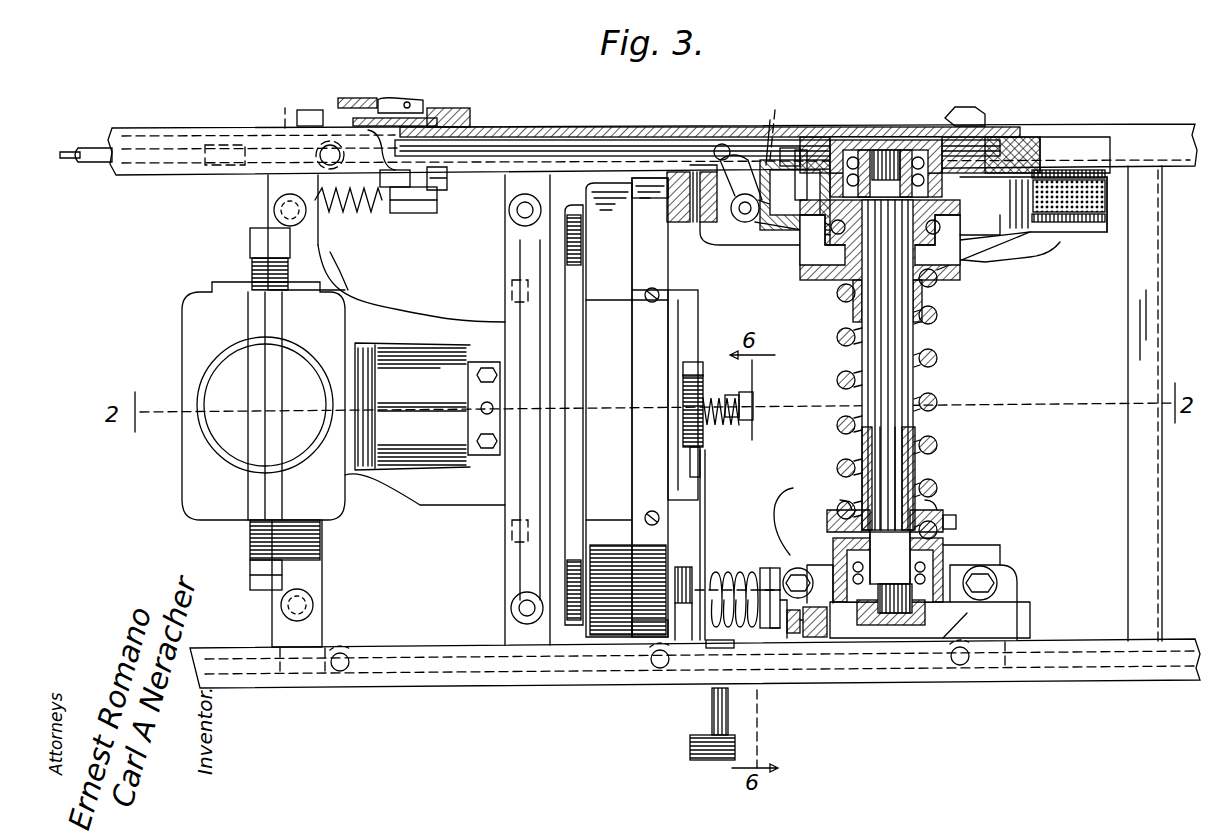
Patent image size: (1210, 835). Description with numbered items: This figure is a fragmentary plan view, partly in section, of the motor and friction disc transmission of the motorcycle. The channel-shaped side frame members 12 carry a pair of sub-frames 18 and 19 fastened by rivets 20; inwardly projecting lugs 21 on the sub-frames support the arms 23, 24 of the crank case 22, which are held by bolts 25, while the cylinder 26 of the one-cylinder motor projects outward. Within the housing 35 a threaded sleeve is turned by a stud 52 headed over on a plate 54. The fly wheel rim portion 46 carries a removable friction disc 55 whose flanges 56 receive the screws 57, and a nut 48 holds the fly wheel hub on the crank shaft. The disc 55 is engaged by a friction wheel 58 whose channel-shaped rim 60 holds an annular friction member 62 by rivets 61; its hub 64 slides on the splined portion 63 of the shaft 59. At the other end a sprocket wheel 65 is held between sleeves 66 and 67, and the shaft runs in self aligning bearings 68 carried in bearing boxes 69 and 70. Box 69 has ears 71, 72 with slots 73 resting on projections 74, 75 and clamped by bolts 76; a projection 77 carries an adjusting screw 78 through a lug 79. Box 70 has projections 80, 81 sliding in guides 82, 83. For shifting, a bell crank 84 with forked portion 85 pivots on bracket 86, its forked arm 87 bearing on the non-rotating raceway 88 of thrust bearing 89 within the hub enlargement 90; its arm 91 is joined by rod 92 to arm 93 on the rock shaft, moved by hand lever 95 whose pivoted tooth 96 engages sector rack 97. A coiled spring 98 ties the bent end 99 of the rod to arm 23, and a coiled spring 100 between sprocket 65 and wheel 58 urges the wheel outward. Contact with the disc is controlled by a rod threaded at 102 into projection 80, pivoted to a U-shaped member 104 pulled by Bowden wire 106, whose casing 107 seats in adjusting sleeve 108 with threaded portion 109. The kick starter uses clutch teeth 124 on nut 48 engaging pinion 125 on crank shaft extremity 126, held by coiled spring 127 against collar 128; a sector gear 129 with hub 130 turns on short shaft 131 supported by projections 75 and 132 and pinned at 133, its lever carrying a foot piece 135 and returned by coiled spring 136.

The side frame members 12 is at (215, 122).
The sub-frame 18 is at (705, 172).
The sub-frame 19 is at (598, 680).
The rivets 20 is at (340, 672).
The lugs 21 is at (268, 186).
The crank case 22 is at (392, 325).
The arms 23 is at (250, 268).
The arms 24 is at (505, 285).
The bolts 25 is at (275, 208).
The cylinder 26 is at (215, 470).
The housing 35 is at (412, 470).
The rim portion 46 is at (612, 345).
The nut 48 is at (680, 380).
The stud 52 is at (482, 405).
The plate 54 is at (478, 378).
The friction disc 55 is at (668, 300).
The flanges 56 is at (668, 297).
The screws 57 is at (660, 295).
The friction wheel 58 is at (1030, 248).
The shaft 59 is at (922, 415).
The channel-shaped rim 60 is at (775, 165).
The rivets 61 is at (708, 150).
The annular friction member 62 is at (700, 235).
The splined portion 63 is at (922, 330).
The hub 64 is at (924, 295).
The sprocket wheel 65 is at (952, 518).
The sleeve 66 is at (918, 462).
The sleeve 67 is at (945, 545).
The self aligning bearings 68 is at (915, 137).
The bearing box 69 is at (1000, 556).
The bearing box 70 is at (940, 137).
The ear 71 is at (1017, 615).
The ear 72 is at (815, 615).
The slots 73 is at (955, 560).
The projection 74 is at (1017, 600).
The projection 75 is at (803, 640).
The clamping bolts 76 is at (790, 572).
The projection 77 is at (793, 640).
The adjusting screw 78 is at (785, 640).
The lug 79 is at (775, 645).
The projection 80 is at (800, 150).
The projection 81 is at (1010, 145).
The guide 82 is at (838, 150).
The guide 83 is at (1020, 160).
The bell crank 84 is at (750, 222).
The forked portion 85 is at (790, 232).
The bracket 86 is at (790, 148).
The forked arm 87 is at (878, 150).
The non-rotating raceway 88 is at (1020, 205).
The anti-friction thrust bearing 89 is at (940, 240).
The enlargement 90 is at (965, 245).
The arm 91 is at (758, 115).
The rod 92 is at (672, 176).
The arm 93 is at (453, 187).
The hand lever 95 is at (410, 100).
The pivoted tooth 96 is at (370, 108).
The sector rack 97 is at (460, 112).
The coiled spring 98 is at (365, 208).
The forward bent end 99 is at (415, 213).
The coiled spring 100 is at (940, 365).
The threaded portion 102 is at (763, 105).
The U-shaped member 104 is at (452, 140).
The Bowden wire 106 is at (75, 160).
The casing 107 is at (100, 150).
The adjusting sleeve 108 is at (232, 133).
The threaded portion 109 is at (328, 127).
The clutch teeth 124 is at (705, 462).
The pinion 125 is at (700, 428).
The extremity 126 is at (745, 420).
The coiled spring 127 is at (755, 405).
The collar 128 is at (740, 395).
The sector gear 129 is at (798, 506).
The hub 130 is at (735, 630).
The short shaft 131 is at (706, 570).
The projection 132 is at (690, 570).
The pin 133 is at (762, 568).
The foot piece 135 is at (703, 731).
The coiled spring 136 is at (715, 628).